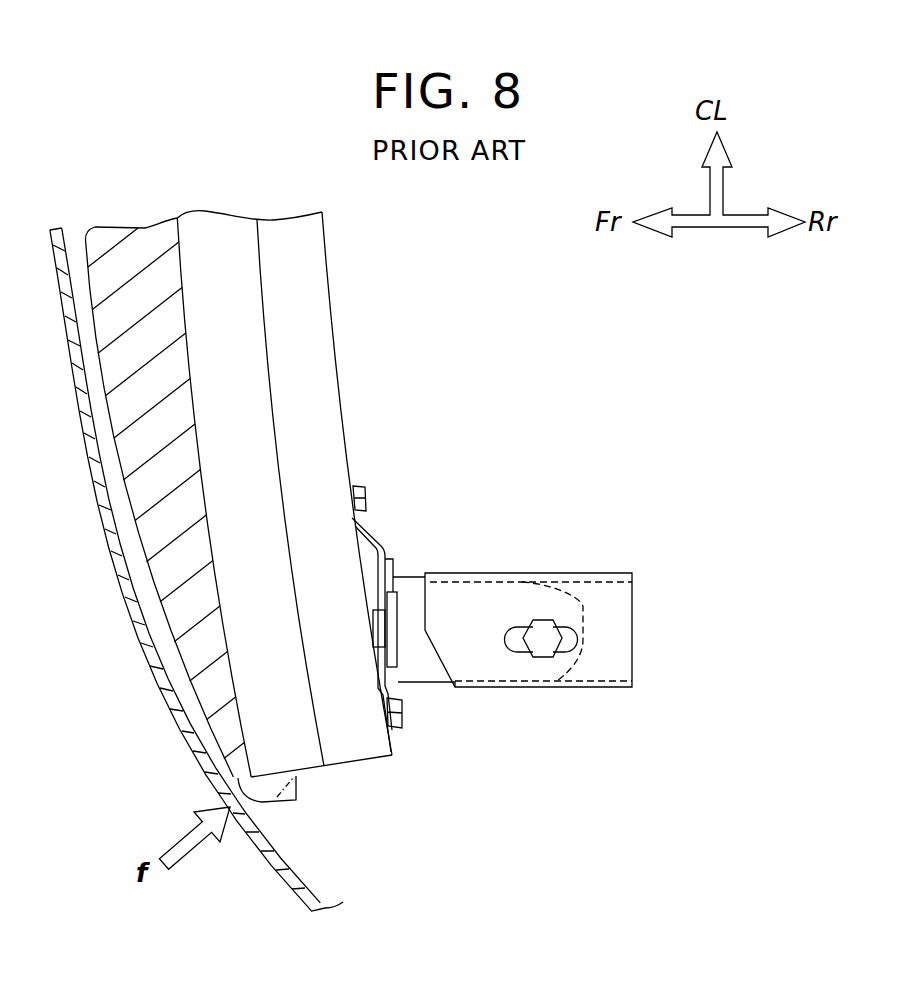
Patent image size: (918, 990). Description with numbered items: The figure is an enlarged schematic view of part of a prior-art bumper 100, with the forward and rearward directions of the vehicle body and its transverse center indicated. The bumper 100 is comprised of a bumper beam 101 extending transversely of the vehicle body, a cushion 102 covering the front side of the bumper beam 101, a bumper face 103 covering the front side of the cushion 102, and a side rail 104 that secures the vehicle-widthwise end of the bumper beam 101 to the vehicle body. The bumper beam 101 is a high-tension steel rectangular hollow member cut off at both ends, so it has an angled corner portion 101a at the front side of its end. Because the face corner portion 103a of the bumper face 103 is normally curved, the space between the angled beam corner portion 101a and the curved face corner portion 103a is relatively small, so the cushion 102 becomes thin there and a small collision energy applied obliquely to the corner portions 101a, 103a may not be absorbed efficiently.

The bumper 100 is at (203, 163).
The bumper beam 101 is at (320, 333).
The angled corner portion 101a is at (233, 775).
The cushion 102 is at (128, 235).
The bumper face 103 is at (150, 659).
The face corner portion 103a is at (240, 827).
The side rail 104 is at (593, 577).